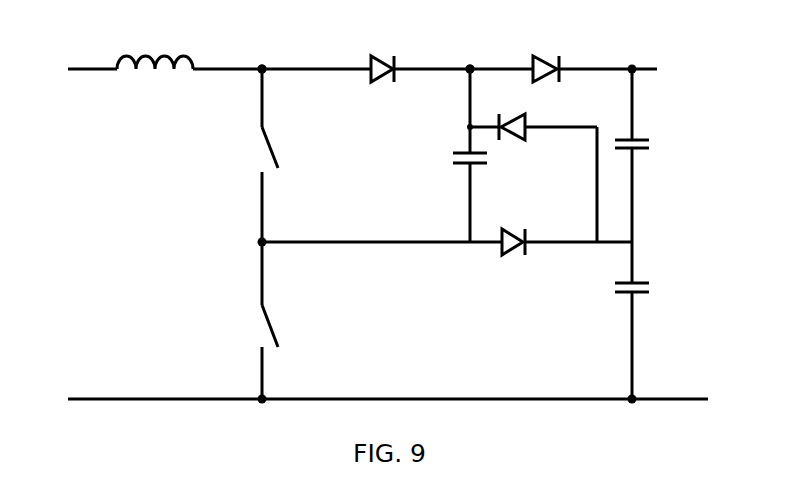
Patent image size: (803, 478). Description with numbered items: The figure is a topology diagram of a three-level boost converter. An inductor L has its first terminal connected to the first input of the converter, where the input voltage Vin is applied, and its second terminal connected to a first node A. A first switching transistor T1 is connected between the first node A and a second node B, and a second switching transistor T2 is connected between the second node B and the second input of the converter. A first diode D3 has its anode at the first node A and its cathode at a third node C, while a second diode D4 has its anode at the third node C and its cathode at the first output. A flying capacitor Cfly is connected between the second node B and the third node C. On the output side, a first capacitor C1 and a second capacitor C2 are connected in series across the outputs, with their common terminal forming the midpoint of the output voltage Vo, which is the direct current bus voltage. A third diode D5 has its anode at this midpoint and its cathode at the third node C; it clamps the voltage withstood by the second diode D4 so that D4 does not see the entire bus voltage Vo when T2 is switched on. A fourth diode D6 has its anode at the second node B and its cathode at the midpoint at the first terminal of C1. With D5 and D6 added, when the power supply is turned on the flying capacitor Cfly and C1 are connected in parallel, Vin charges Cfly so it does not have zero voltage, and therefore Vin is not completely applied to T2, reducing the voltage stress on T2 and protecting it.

The inductor L is at (155, 46).
The first node A is at (265, 54).
The second node B is at (244, 240).
The third node C is at (470, 54).
The first switching transistor T1 is at (232, 155).
The second switching transistor T2 is at (232, 320).
The first diode D3 is at (387, 53).
The second diode D4 is at (550, 53).
The third diode D5 is at (533, 178).
The fourth diode D6 is at (513, 262).
The flying capacitor Cfly is at (448, 155).
The first capacitor C1 is at (654, 155).
The second capacitor C2 is at (654, 320).
The input voltage Vin is at (65, 156).
The output voltage Vo is at (704, 309).